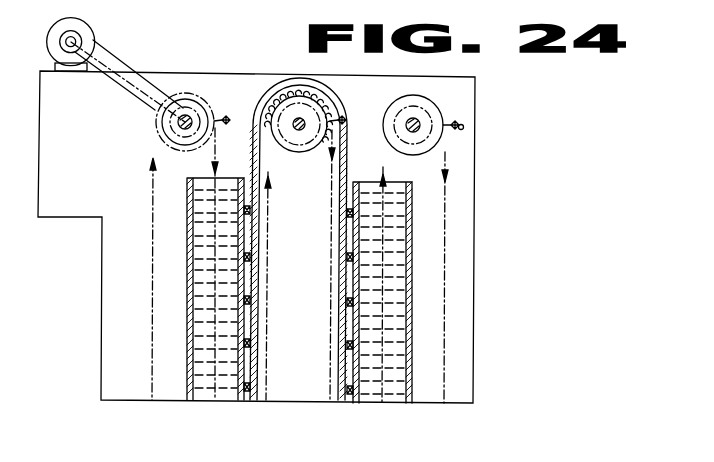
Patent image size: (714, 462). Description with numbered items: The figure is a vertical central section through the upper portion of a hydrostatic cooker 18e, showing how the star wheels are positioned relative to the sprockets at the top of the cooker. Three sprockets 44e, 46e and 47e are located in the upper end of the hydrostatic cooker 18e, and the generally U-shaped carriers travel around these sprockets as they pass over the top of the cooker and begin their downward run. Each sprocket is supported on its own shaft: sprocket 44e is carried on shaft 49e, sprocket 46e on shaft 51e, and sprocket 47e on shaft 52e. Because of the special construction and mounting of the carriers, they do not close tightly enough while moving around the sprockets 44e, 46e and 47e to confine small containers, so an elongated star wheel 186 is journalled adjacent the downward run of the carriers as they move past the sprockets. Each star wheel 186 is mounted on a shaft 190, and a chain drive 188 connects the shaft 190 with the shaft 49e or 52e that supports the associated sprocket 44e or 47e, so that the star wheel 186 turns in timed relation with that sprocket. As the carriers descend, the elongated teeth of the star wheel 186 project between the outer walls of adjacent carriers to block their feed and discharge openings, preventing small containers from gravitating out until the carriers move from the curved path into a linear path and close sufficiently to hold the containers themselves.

The hydrostatic cooker 18e is at (491, 230).
The sprocket 44e is at (168, 149).
The shaft 49e is at (180, 121).
The shaft 51e is at (300, 130).
The sprocket 46e is at (291, 147).
The shaft 52e is at (417, 128).
The sprocket 47e is at (405, 156).
The star wheel 186 is at (229, 115).
The chain drive 188 is at (227, 112).
The shaft 190 is at (464, 128).